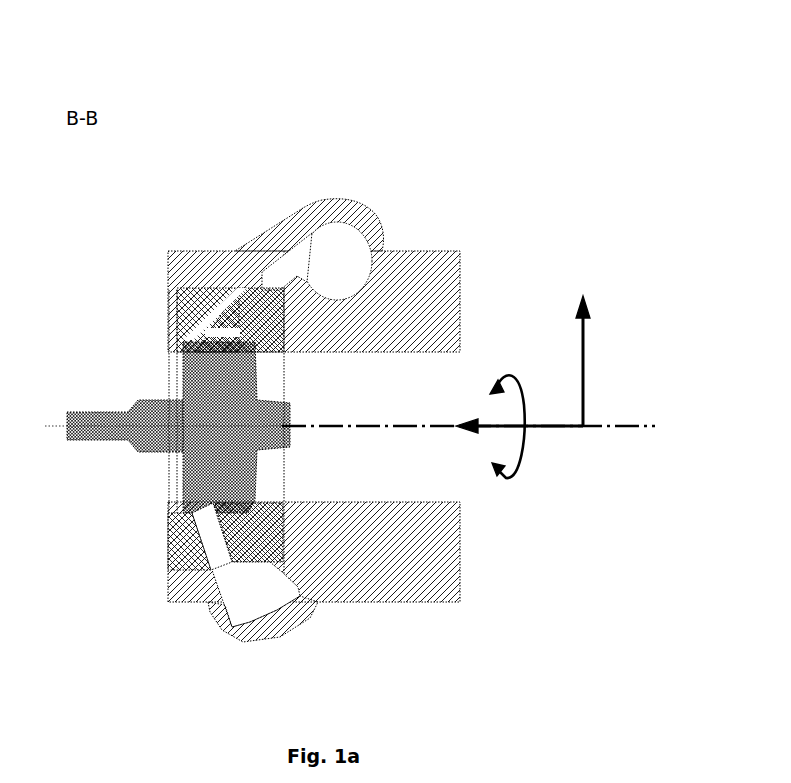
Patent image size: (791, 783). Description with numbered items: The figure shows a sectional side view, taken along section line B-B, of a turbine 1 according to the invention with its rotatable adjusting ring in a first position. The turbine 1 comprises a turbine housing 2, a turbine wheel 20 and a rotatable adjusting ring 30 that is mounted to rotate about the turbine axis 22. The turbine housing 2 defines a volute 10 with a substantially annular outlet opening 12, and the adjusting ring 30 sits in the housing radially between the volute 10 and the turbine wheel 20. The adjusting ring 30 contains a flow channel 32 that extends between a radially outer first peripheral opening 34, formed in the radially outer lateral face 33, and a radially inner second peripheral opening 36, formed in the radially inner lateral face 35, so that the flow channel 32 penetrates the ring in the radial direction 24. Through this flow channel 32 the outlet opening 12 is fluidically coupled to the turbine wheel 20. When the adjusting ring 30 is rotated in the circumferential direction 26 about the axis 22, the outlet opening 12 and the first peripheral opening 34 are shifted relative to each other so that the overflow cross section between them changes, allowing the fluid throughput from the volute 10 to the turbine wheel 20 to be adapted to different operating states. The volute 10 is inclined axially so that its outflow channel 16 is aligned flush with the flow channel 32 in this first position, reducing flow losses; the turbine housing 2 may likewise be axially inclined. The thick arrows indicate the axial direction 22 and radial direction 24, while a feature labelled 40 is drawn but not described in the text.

The turbine 1 is at (220, 114).
The turbine housing 2 is at (430, 258).
The volute 10 is at (343, 253).
The outlet opening 12 is at (247, 572).
The outflow channel 16 is at (268, 277).
The turbine wheel 20 is at (205, 385).
The turbine axis 22 is at (377, 428).
The radial direction 24 is at (587, 360).
The circumferential direction 26 is at (520, 455).
The adjusting ring 30 is at (197, 555).
The flow channel 32 is at (225, 550).
The radially outer lateral face 33 is at (232, 290).
The first peripheral opening 34 is at (250, 292).
The radially inner lateral face 35 is at (175, 342).
The second peripheral opening 36 is at (209, 516).
The clearance 40 is at (212, 327).